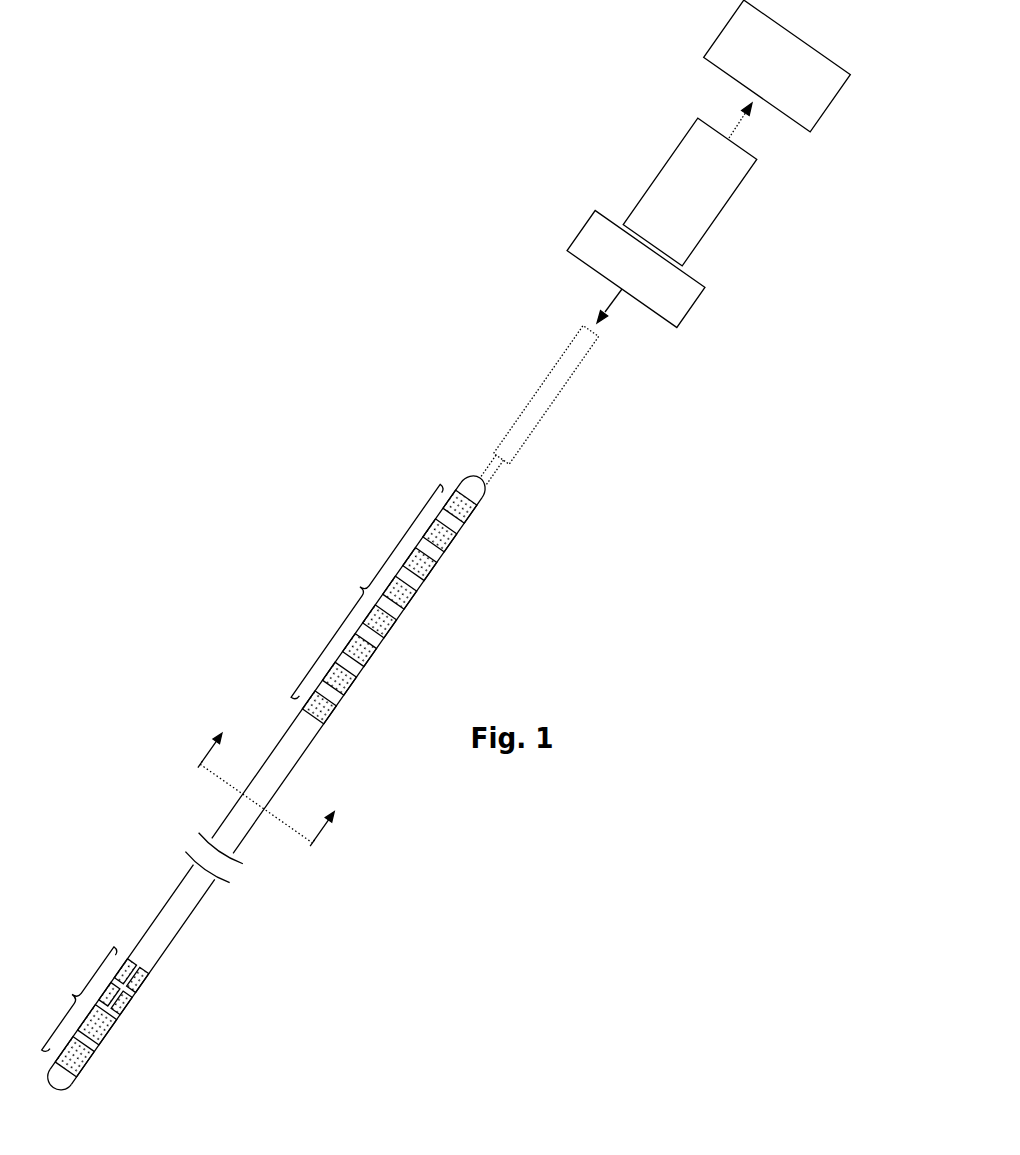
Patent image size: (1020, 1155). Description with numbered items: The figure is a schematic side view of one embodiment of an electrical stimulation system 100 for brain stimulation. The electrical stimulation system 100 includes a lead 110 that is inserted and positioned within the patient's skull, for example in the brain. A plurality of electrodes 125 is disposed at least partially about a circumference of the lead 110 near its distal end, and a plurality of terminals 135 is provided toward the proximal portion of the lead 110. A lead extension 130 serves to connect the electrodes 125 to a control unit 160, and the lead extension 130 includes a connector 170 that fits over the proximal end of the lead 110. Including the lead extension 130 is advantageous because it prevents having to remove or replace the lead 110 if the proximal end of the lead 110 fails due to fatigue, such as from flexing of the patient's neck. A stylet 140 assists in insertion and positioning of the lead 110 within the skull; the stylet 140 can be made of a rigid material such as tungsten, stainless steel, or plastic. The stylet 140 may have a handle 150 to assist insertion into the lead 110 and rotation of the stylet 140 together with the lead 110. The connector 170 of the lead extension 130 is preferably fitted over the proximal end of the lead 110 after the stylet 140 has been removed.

The electrical stimulation system 100 is at (271, 751).
The lead 110 is at (165, 912).
The electrodes 125 is at (92, 1010).
The lead extension 130 is at (658, 178).
The terminals 135 is at (380, 600).
The stylet 140 is at (485, 461).
The handle 150 is at (552, 382).
The control unit 160 is at (720, 45).
The connector 170 is at (587, 235).